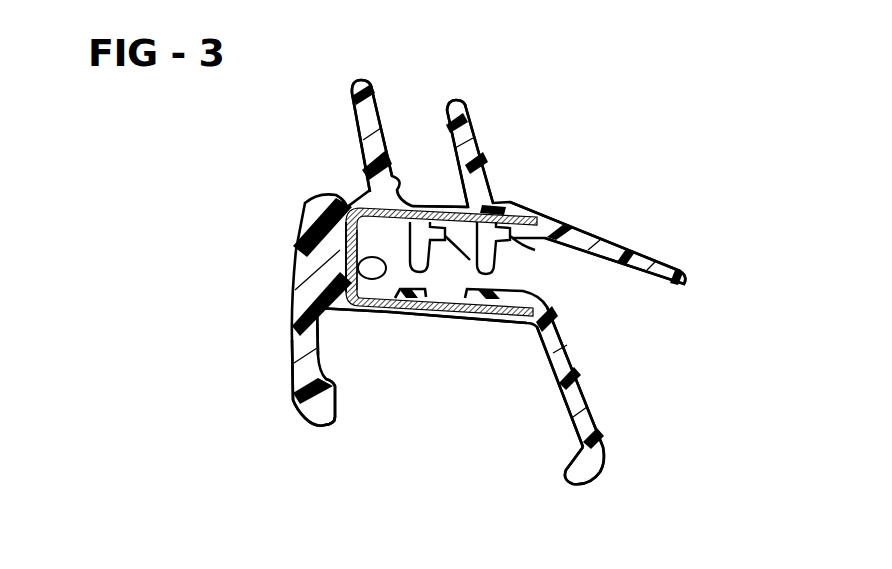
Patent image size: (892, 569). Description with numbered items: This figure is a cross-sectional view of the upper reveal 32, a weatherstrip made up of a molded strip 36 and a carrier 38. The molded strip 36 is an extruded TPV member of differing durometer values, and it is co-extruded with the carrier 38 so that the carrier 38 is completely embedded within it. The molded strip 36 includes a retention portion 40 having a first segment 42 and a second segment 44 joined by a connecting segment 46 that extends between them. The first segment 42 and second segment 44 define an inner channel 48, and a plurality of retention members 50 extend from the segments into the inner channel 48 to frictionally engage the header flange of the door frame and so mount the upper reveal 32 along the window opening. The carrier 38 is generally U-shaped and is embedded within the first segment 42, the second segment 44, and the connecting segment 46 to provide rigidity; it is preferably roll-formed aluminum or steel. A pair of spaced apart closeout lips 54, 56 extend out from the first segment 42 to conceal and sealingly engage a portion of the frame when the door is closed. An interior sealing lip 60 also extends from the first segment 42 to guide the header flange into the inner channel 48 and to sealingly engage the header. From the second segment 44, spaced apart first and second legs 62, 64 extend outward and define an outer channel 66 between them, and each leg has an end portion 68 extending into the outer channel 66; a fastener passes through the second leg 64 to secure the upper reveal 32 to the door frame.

The upper reveal 32 is at (256, 201).
The molded strip 36 is at (316, 201).
The carrier 38 is at (447, 310).
The retention portion 40 is at (345, 258).
The first segment 42 is at (443, 205).
The second segment 44 is at (397, 311).
The connecting segment 46 is at (345, 246).
The inner channel 48 is at (357, 272).
The retention members 50 is at (447, 236).
The closeout lip 54 is at (360, 78).
The closeout lip 56 is at (455, 97).
The interior sealing lip 60 is at (652, 262).
The first leg 62 is at (292, 388).
The second leg 64 is at (600, 414).
The outer channel 66 is at (336, 385).
The end portion 68 is at (335, 422).